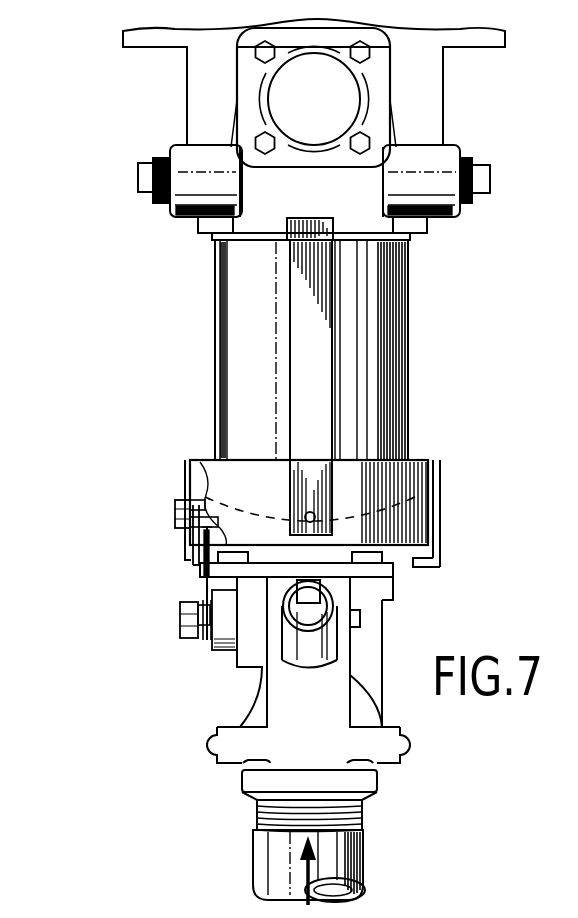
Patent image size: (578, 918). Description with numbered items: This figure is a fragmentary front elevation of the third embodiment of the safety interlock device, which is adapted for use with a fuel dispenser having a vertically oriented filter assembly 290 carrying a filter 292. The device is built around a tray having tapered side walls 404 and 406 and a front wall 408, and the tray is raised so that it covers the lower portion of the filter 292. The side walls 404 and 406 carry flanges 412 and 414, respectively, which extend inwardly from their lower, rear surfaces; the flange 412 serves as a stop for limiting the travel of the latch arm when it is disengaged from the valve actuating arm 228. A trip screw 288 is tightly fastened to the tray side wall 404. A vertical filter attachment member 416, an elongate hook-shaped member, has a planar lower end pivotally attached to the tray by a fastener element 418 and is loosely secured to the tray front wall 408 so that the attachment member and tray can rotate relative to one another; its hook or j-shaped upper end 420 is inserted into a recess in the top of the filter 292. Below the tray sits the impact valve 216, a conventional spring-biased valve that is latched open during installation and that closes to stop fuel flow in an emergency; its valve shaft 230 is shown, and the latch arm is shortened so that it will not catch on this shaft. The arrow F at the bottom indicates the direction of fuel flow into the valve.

The filter assembly 290 is at (452, 120).
The hook-shaped upper end 420 is at (312, 230).
The filter 292 is at (405, 318).
The vertical filter attachment member 416 is at (305, 327).
The tray side wall 404 is at (186, 478).
The tray side wall 406 is at (441, 483).
The front wall 408 is at (412, 465).
The fastener element 418 is at (304, 515).
The flange 414 is at (436, 560).
The trip screw 288 is at (178, 520).
The flange 412 is at (188, 562).
The valve actuating arm 228 is at (196, 580).
The valve shaft 230 is at (213, 637).
The impact valve 216 is at (243, 700).
The force direction F is at (318, 900).